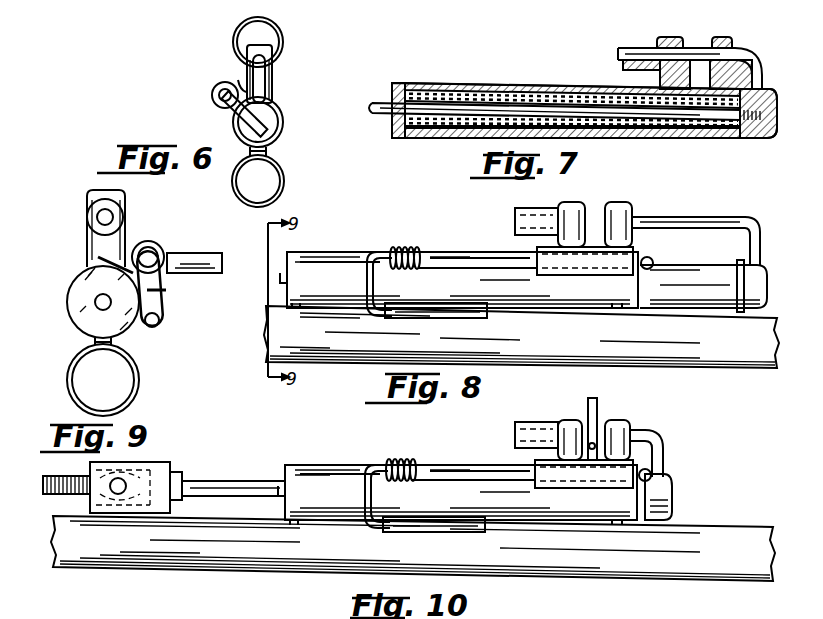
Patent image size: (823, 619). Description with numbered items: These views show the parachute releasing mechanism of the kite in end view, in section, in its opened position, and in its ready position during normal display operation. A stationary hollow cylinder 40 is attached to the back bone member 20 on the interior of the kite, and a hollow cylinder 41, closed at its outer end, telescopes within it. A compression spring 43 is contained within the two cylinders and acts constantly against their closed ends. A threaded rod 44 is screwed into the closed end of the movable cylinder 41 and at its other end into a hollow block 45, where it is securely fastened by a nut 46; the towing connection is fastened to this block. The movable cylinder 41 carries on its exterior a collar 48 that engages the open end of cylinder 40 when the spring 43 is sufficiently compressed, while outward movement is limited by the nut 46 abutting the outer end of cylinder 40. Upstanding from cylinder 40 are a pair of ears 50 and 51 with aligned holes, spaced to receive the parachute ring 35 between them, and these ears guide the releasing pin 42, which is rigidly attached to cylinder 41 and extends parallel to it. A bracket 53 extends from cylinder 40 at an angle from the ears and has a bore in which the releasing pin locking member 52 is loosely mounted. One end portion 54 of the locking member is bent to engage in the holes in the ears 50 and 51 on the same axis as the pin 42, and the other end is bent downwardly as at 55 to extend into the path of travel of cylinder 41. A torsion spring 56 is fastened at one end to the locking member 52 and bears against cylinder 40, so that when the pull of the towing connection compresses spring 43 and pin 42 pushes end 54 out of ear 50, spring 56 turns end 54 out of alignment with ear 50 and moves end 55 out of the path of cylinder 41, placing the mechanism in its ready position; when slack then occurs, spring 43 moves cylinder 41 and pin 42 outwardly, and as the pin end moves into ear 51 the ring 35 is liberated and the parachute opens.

In FIG. 6, the back bone member 20 is at (285, 178).
In FIG. 9, the back bone member 20 is at (140, 380).
In FIG. 8, the back bone member 20 is at (728, 368).
In FIG. 10, the back bone member 20 is at (162, 583).
In FIG. 6, the ring 35 is at (284, 58).
In FIG. 8, the ring 35 is at (536, 221).
In FIG. 10, the ring 35 is at (592, 405).
In FIG. 7, the stationary hollow cylinder 40 is at (416, 139).
In FIG. 7, the movable hollow cylinder 41 is at (446, 139).
In FIG. 8, the movable hollow cylinder 41 is at (700, 256).
In FIG. 7, the parachute releasing pin 42 is at (764, 70).
In FIG. 8, the parachute releasing pin 42 is at (696, 218).
In FIG. 10, the parachute releasing pin 42 is at (647, 436).
In FIG. 7, the compression spring 43 is at (414, 88).
In FIG. 7, the threaded rod 44 is at (376, 118).
In FIG. 10, the threaded rod 44 is at (232, 481).
In FIG. 10, the hollow block 45 is at (160, 462).
In FIG. 10, the nut 46 is at (183, 480).
In FIG. 8, the collar 48 is at (740, 260).
In FIG. 7, the ear 50 is at (628, 40).
In FIG. 9, the ear 50 is at (86, 240).
In FIG. 8, the ear 50 is at (572, 203).
In FIG. 10, the ear 50 is at (570, 440).
In FIG. 6, the ear 51 is at (273, 84).
In FIG. 7, the ear 51 is at (735, 46).
In FIG. 8, the ear 51 is at (628, 203).
In FIG. 10, the ear 51 is at (617, 440).
In FIG. 8, the releasing pin locking member 52 is at (456, 258).
In FIG. 10, the releasing pin locking member 52 is at (455, 466).
In FIG. 6, the bracket 53 is at (212, 97).
In FIG. 8, the bracket 53 is at (546, 275).
In FIG. 10, the bracket 53 is at (534, 484).
In FIG. 9, the end portion of locking member 54 is at (164, 303).
In FIG. 8, the end portion of locking member 54 is at (452, 303).
In FIG. 10, the end portion of locking member 54 is at (447, 517).
In FIG. 6, the downwardly bent end of locking member 55 is at (243, 122).
In FIG. 9, the downwardly bent end of locking member 55 is at (194, 258).
In FIG. 8, the downwardly bent end of locking member 55 is at (651, 259).
In FIG. 10, the downwardly bent end of locking member 55 is at (660, 475).
In FIG. 6, the torsion spring 56 is at (245, 80).
In FIG. 9, the torsion spring 56 is at (148, 243).
In FIG. 8, the torsion spring 56 is at (398, 253).
In FIG. 10, the torsion spring 56 is at (395, 462).